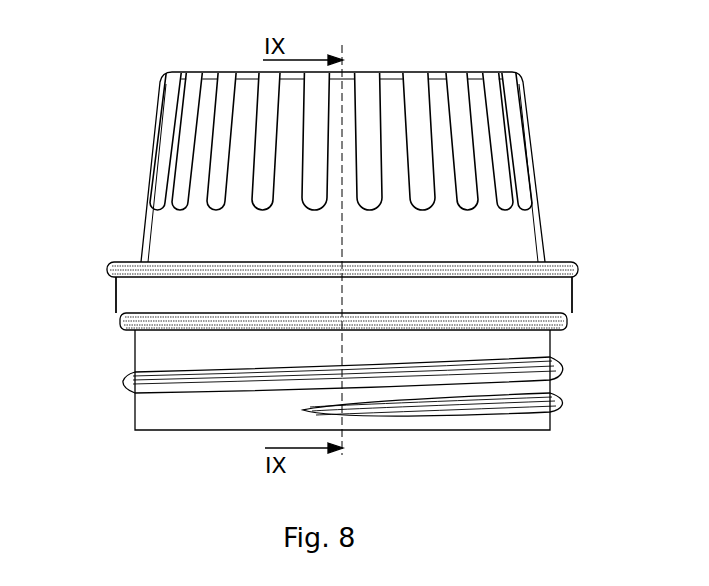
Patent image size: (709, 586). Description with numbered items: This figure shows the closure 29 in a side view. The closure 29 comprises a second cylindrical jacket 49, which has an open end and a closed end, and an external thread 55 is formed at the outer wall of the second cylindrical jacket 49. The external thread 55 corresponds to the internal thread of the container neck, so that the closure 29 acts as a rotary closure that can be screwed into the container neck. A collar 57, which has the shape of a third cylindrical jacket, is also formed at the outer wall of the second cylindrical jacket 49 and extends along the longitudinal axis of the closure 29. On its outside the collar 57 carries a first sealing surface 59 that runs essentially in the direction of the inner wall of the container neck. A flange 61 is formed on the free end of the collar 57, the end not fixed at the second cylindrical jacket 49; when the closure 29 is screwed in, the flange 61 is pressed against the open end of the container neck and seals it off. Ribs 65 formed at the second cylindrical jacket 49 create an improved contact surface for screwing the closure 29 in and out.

The closure 29 is at (376, 135).
The ribs 65 is at (465, 95).
The flange 61 is at (557, 268).
The first sealing surface 59 is at (130, 293).
The collar 57 is at (556, 296).
The second cylindrical jacket 49 is at (543, 345).
The external thread 55 is at (548, 410).